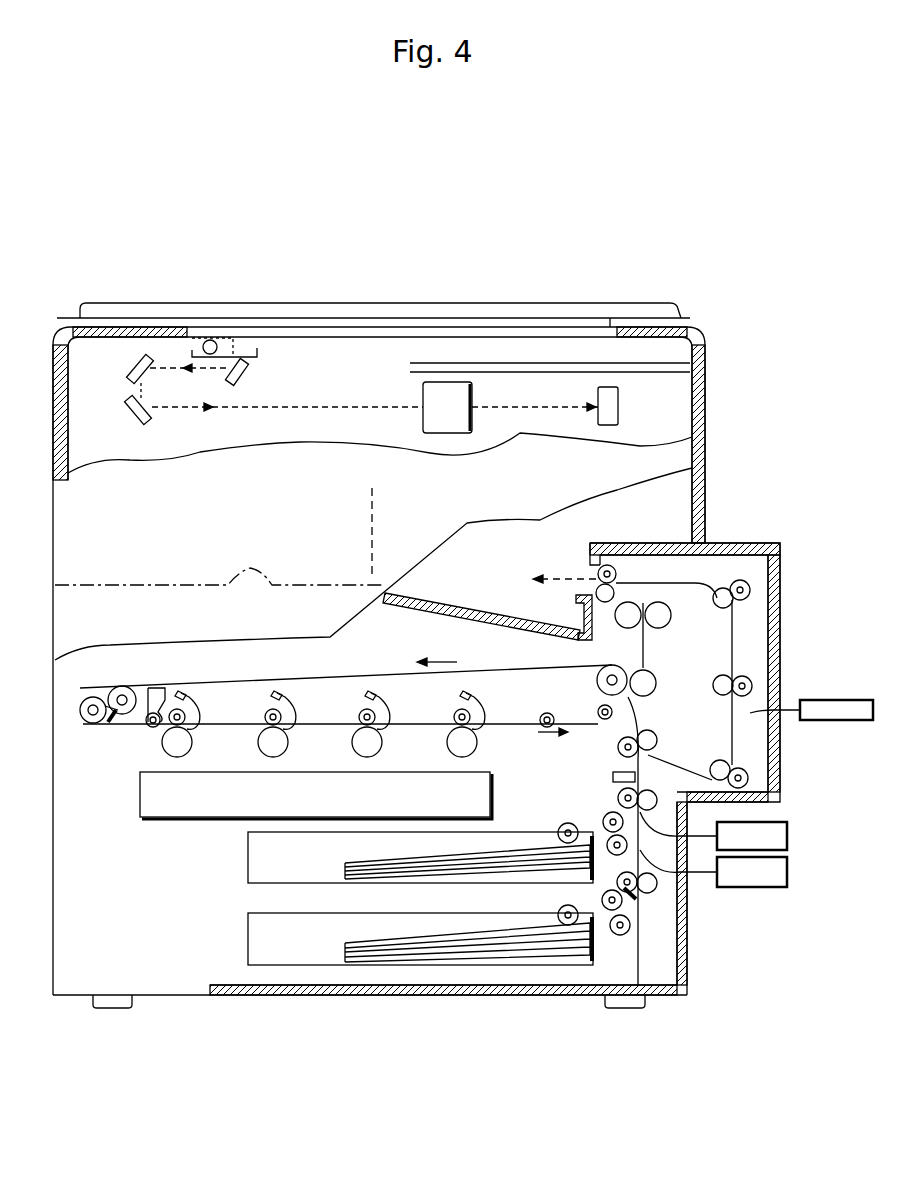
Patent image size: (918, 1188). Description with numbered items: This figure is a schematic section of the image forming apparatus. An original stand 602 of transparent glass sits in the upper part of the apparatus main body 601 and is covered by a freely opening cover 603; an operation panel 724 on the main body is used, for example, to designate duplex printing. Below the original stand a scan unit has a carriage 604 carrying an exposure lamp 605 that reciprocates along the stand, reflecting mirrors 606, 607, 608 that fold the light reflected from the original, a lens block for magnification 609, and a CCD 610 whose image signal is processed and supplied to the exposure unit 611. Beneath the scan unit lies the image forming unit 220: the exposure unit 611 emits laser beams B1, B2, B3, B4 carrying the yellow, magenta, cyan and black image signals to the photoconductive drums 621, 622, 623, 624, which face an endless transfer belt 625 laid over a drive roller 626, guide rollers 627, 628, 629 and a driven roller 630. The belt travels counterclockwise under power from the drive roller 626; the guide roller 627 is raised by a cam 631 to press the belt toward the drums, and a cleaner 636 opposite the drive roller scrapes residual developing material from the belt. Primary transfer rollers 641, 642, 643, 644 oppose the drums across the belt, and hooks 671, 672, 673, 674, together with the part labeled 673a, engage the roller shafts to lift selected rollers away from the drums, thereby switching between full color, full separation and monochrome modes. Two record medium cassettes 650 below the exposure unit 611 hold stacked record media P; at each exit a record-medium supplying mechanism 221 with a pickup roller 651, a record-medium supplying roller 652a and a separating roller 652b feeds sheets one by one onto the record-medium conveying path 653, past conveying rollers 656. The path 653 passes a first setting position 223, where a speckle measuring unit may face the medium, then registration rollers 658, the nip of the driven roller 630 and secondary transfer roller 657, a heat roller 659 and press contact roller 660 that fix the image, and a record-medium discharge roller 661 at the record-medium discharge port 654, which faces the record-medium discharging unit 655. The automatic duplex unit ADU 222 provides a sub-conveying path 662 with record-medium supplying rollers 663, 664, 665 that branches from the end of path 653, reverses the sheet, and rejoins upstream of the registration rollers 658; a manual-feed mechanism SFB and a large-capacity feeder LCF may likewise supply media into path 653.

The apparatus main body 601 is at (705, 403).
The original stand 602 is at (388, 343).
The cover 603 is at (525, 300).
The carriage 604 is at (262, 357).
The exposure lamp 605 is at (210, 340).
The reflecting mirror 606 is at (250, 372).
The reflecting mirror 607 is at (130, 363).
The reflecting mirror 608 is at (115, 415).
The lens block for magnification 609 is at (474, 388).
The CCD 610 is at (620, 400).
The exposure unit 611 is at (140, 805).
The photoconductive drum 621 is at (193, 742).
The photoconductive drum 622 is at (289, 742).
The photoconductive drum 623 is at (383, 742).
The photoconductive drum 624 is at (478, 742).
The transfer belt 625 is at (363, 677).
The drive roller 626 is at (120, 686).
The guide roller 627 is at (148, 725).
The guide roller 628 is at (545, 712).
The guide roller 629 is at (600, 706).
The driven roller 630 is at (611, 665).
The cam 631 is at (155, 690).
The cleaner 636 is at (82, 698).
The primary transfer roller 641 is at (181, 697).
The primary transfer roller 642 is at (277, 697).
The primary transfer roller 643 is at (371, 697).
The primary transfer roller 644 is at (466, 697).
The record medium cassette 650 is at (248, 869).
The pickup roller 651 is at (561, 825).
The record-medium supplying roller 652a is at (607, 816).
The separating roller 652b is at (618, 856).
The record-medium conveying path 653 is at (641, 718).
The record-medium discharge port 654 is at (592, 567).
The record-medium discharging unit 655 is at (322, 585).
The conveying rollers 656 is at (616, 782).
The secondary transfer roller 657 is at (657, 676).
The registration rollers 658 is at (618, 748).
The heat roller 659 is at (577, 614).
The press contact roller 660 is at (672, 616).
The record-medium discharge roller 661 is at (620, 573).
The sub-conveying path 662 is at (714, 591).
The record-medium supplying roller 663 is at (740, 580).
The record-medium supplying roller 664 is at (738, 676).
The record-medium supplying roller 665 is at (740, 768).
The hook 671 is at (199, 715).
The hook 672 is at (295, 715).
The hook 673 is at (389, 715).
The cleaner blade 673a is at (105, 724).
The hook 674 is at (484, 715).
The operation panel 724 is at (652, 322).
The image forming unit 220 is at (452, 650).
The record-medium supplying mechanism 221 is at (680, 950).
The automatic duplex unit 222 is at (842, 617).
The first setting position 223 is at (613, 775).
The laser beam B1 is at (165, 770).
The laser beam B2 is at (259, 770).
The laser beam B3 is at (353, 770).
The laser beam B4 is at (448, 770).
The record medium P is at (384, 860).
The automatic duplex unit ADU is at (811, 710).
The manual-feed record-medium supplying mechanism SFB is at (713, 831).
The large-capacity record medium feeder LCF is at (713, 868).